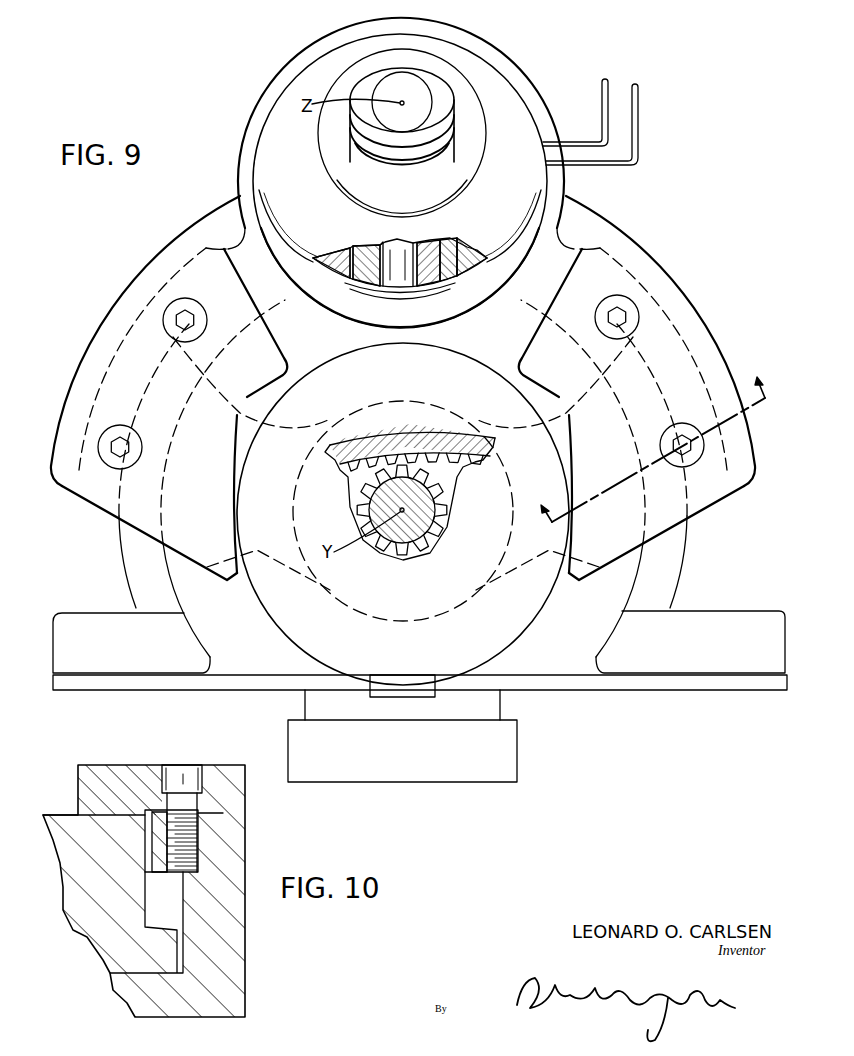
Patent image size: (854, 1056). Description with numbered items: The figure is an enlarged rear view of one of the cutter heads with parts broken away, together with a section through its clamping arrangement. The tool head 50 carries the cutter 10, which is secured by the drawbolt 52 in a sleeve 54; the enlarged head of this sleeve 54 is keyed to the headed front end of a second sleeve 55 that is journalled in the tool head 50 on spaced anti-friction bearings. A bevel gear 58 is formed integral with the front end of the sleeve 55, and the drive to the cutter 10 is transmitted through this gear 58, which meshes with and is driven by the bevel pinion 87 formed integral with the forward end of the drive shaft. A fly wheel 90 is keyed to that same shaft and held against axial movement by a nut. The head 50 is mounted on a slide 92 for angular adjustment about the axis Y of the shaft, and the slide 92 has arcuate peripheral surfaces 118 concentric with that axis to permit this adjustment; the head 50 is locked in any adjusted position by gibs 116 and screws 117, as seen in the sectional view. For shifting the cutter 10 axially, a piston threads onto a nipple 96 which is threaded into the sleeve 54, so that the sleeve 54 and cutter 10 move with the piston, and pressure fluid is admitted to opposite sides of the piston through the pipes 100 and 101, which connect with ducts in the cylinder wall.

In FIG. 9, the cutter 10 is at (647, 439).
In FIG. 9, the tool head 50 is at (222, 221).
In FIG. 10, the tool head 50 is at (232, 950).
In FIG. 9, the drawbolt 52 is at (417, 88).
In FIG. 9, the sleeve 54 is at (377, 280).
In FIG. 9, the sleeve 55 is at (366, 278).
In FIG. 9, the bevel gear 58 is at (358, 450).
In FIG. 9, the bevel pinion 87 is at (432, 513).
In FIG. 9, the fly wheel 90 is at (468, 368).
In FIG. 9, the slide 92 is at (705, 622).
In FIG. 10, the slide 92 is at (65, 828).
In FIG. 9, the nipple 96 is at (444, 110).
In FIG. 9, the pipe 100 is at (639, 122).
In FIG. 9, the pipe 101 is at (601, 97).
In FIG. 9, the gibs 116 is at (737, 443).
In FIG. 10, the gibs 116 is at (122, 775).
In FIG. 10, the screws 117 is at (182, 773).
In FIG. 9, the arcuate peripheral surfaces 118 is at (123, 567).
In FIG. 10, the arcuate peripheral surfaces 118 is at (148, 915).